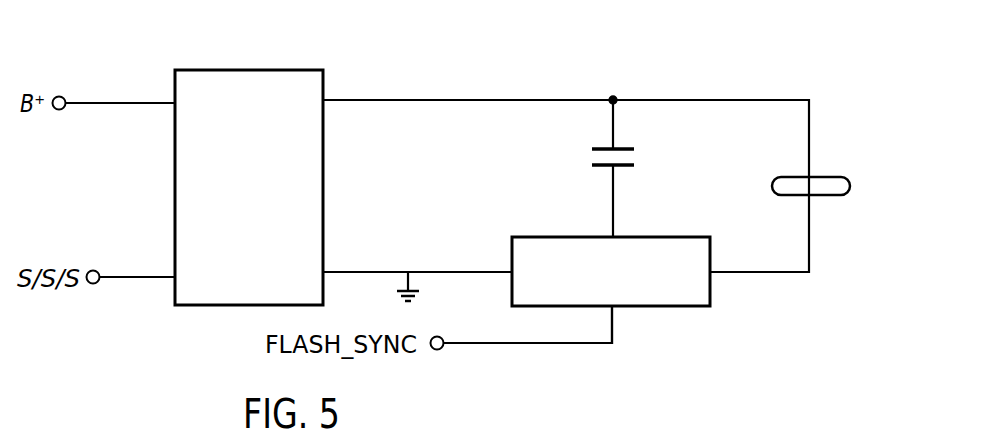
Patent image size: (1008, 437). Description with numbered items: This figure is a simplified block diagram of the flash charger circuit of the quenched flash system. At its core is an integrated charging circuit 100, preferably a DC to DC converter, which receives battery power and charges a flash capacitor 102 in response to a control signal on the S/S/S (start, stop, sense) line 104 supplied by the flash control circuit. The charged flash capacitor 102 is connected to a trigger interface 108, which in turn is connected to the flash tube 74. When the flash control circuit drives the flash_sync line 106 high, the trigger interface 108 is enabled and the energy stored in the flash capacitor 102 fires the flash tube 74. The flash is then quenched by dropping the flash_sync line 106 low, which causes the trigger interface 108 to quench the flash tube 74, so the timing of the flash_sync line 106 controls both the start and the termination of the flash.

The integrated charging circuit 100 is at (245, 70).
The flash capacitor 102 is at (630, 153).
The S/S/S line 104 is at (116, 276).
The flash_sync line 106 is at (500, 345).
The trigger interface 108 is at (668, 308).
The flash tube 74 is at (818, 177).